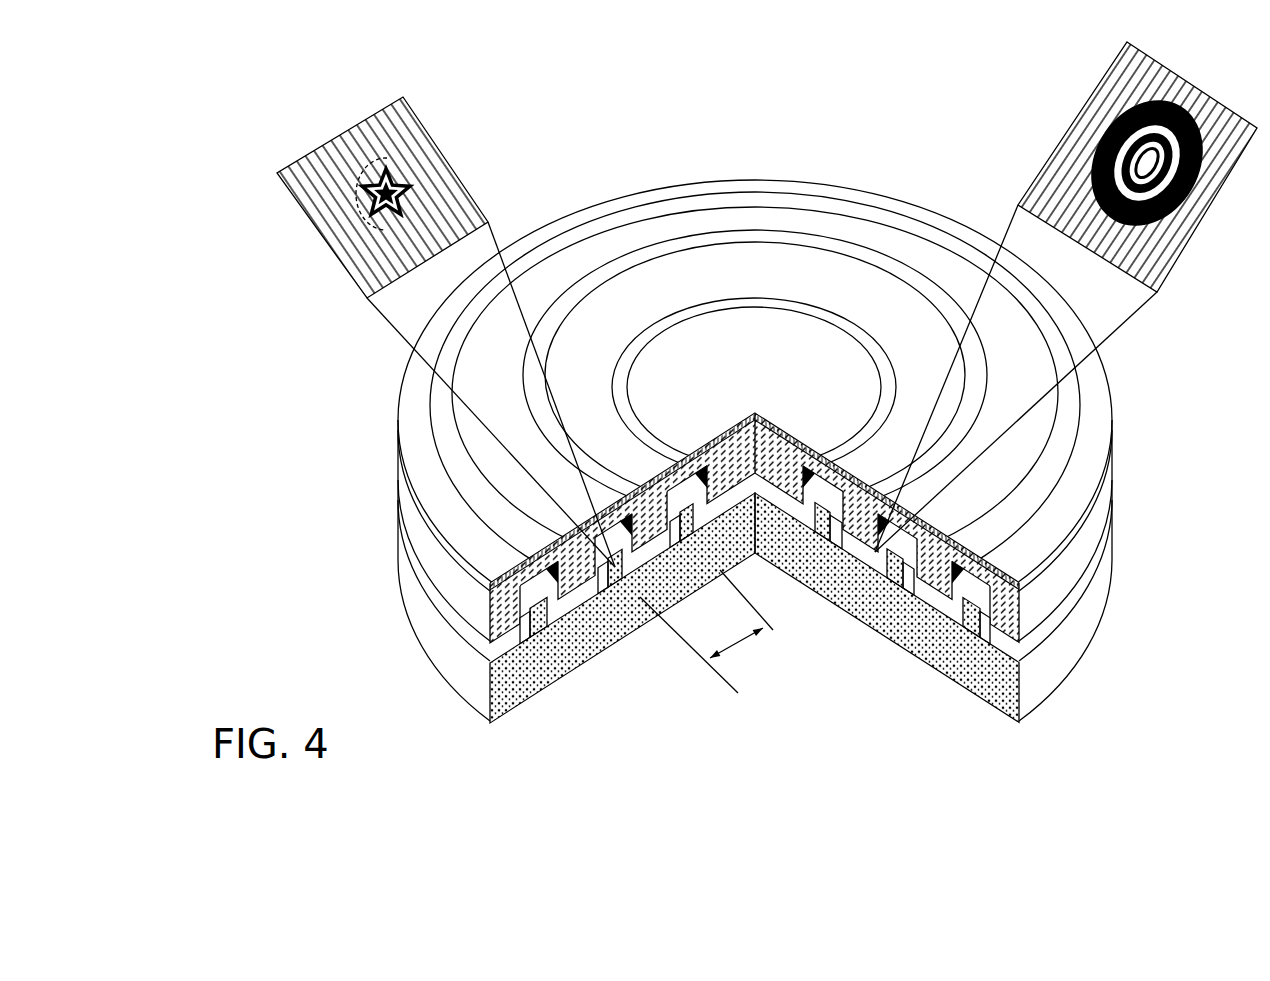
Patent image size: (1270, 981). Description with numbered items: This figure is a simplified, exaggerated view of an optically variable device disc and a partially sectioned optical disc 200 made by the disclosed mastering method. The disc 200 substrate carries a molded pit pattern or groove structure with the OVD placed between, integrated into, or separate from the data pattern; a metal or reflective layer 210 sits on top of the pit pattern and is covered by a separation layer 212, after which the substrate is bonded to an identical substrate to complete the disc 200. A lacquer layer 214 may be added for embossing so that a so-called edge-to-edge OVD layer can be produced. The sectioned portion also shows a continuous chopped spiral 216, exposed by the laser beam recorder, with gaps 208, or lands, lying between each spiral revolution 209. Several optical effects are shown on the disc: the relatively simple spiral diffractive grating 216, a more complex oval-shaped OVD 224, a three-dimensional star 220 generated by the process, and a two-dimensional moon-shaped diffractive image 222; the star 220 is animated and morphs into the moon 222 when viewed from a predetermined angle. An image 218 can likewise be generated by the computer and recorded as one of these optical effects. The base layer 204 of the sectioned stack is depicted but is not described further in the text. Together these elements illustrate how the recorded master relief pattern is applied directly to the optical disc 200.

The optical disc 200 is at (382, 591).
The substrate 204 is at (967, 693).
The gaps 208 is at (872, 282).
The spiral revolution 209 is at (1003, 531).
The metal or reflective layer 210 is at (1058, 625).
The separation layer 212 is at (1058, 587).
The lacquer layer 214 is at (1078, 532).
The spiral diffractive grating 216 is at (741, 300).
The image 218 is at (467, 178).
The three-dimensional star 220 is at (385, 180).
The moon-shaped diffractive image 222 is at (360, 190).
The oval-shaped OVD 224 is at (1087, 161).